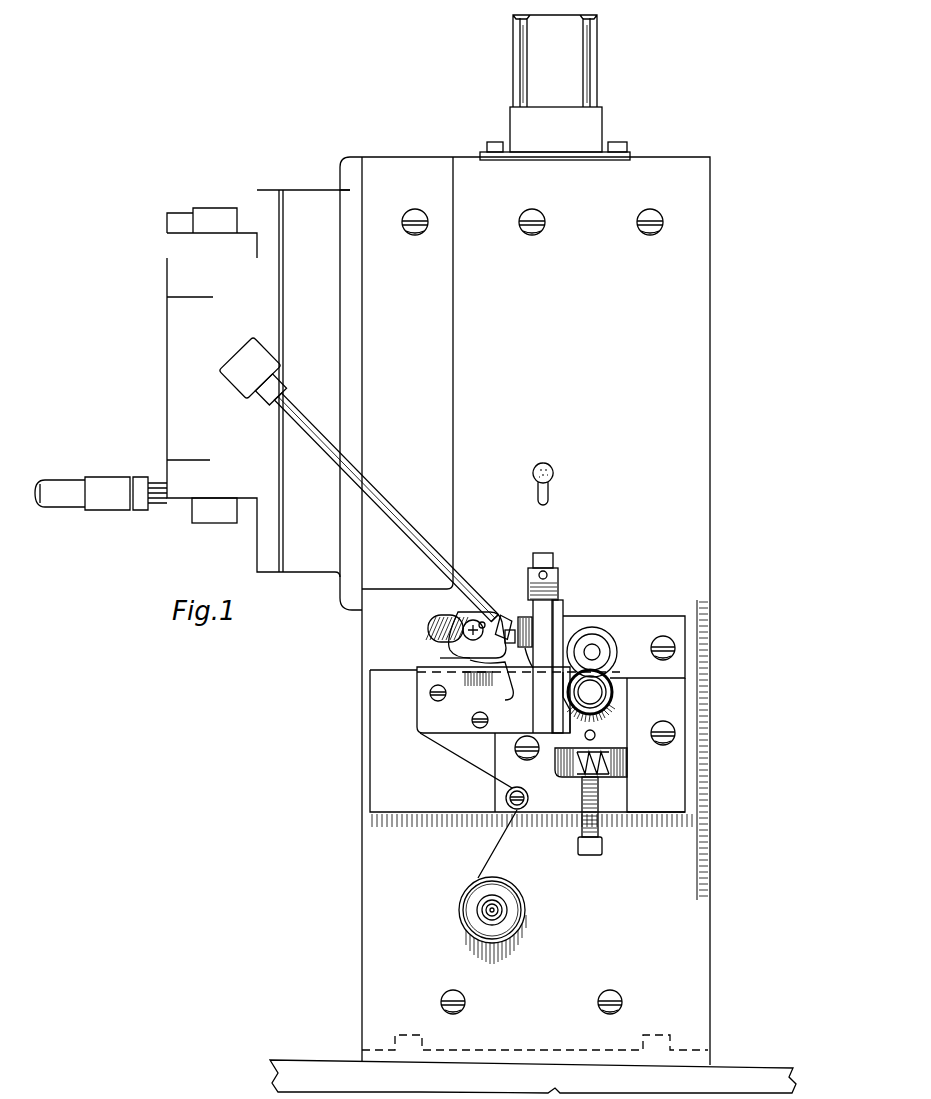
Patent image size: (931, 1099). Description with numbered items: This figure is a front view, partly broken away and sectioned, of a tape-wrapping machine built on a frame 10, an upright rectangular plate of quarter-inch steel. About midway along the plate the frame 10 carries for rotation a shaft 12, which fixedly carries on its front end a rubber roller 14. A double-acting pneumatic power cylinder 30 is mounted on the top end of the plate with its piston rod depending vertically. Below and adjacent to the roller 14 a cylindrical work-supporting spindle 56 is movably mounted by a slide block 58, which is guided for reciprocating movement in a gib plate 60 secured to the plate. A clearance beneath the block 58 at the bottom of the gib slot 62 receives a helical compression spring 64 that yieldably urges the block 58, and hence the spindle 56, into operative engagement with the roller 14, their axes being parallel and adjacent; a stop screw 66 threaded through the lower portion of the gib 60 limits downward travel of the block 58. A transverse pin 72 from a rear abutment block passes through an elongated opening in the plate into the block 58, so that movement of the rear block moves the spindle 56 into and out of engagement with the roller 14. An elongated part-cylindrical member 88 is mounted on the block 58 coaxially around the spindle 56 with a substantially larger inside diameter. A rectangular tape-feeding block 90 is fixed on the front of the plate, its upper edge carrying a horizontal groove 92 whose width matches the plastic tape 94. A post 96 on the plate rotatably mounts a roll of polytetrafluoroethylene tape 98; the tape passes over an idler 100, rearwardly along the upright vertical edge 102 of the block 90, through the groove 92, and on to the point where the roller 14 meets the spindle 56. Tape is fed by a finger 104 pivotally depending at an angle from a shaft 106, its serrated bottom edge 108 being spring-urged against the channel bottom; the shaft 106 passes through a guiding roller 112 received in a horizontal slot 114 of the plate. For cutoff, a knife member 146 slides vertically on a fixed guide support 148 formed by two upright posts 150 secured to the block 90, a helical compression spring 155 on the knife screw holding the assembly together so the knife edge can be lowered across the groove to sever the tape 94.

The frame 10 is at (705, 988).
The shaft 12 is at (593, 644).
The rubber roller 14 is at (613, 643).
The pneumatic power cylinder 30 is at (605, 80).
The work-supporting spindle 56 is at (615, 695).
The slide block 58 is at (617, 742).
The gib plate 60 is at (636, 800).
The gib slot 62 is at (566, 778).
The helical compression spring 64 is at (600, 763).
The stop screw 66 is at (601, 858).
The transverse pin 72 is at (597, 733).
The part-cylindrical member 88 is at (613, 685).
The tape-feeding block 90 is at (428, 733).
The groove 92 is at (467, 658).
The plastic tape 94 is at (457, 747).
The post 96 is at (497, 917).
The roll of tape 98 is at (466, 929).
The idler 100 is at (508, 804).
The upright vertical edge 102 is at (417, 712).
The finger 104 is at (483, 653).
The shaft 106 is at (473, 619).
The serrated edge 108 is at (497, 670).
The guiding roller 112 is at (452, 604).
The horizontal slot 114 is at (430, 617).
The knife member 146 is at (558, 628).
The guide support 148 is at (522, 628).
The upright posts 150 is at (530, 615).
The helical compression spring 155 is at (531, 657).